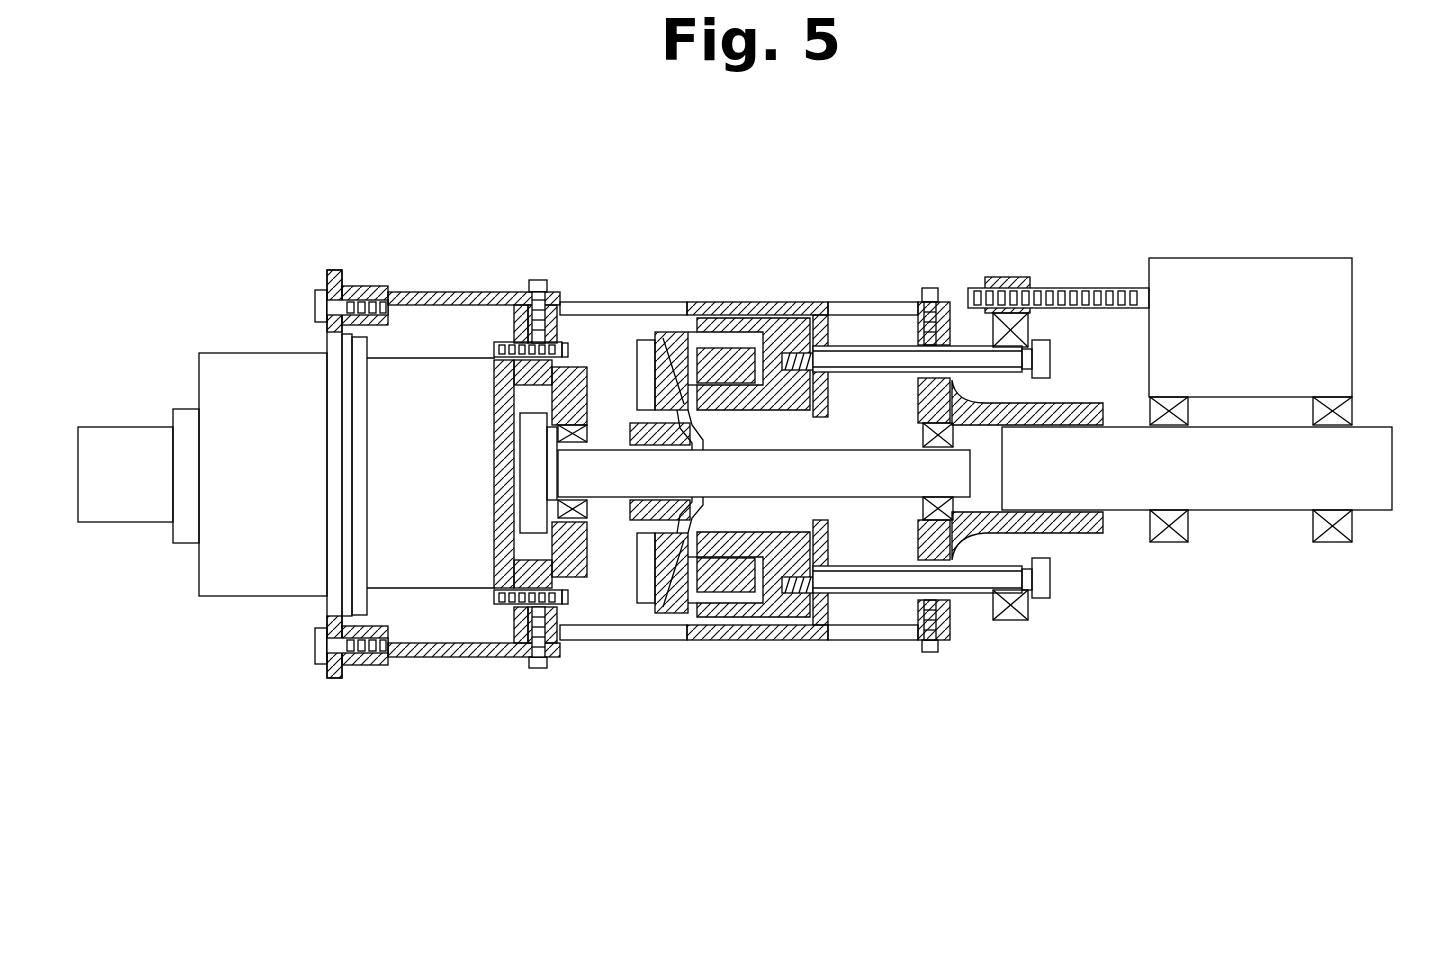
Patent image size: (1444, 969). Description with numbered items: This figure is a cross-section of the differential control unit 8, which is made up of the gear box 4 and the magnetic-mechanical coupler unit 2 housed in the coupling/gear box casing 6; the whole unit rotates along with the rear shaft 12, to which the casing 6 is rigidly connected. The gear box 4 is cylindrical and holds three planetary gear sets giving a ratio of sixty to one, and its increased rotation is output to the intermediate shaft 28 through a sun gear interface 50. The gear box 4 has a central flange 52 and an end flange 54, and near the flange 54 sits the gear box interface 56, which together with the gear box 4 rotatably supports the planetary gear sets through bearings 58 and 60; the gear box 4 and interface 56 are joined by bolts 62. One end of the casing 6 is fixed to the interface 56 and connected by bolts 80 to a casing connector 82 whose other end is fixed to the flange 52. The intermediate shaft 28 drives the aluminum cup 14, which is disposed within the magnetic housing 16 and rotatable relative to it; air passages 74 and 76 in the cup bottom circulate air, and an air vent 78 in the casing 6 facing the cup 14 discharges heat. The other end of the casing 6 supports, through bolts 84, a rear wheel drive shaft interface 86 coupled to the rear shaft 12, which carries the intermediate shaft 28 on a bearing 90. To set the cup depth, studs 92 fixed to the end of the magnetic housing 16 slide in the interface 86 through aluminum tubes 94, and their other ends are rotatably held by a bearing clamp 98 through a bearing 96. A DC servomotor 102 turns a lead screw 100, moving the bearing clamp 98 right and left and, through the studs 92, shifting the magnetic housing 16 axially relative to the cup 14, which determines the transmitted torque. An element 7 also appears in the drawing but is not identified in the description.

The magnetic-mechanical coupler unit 2 is at (735, 337).
The gear box 4 is at (258, 372).
The coupling/gear box casing 6 is at (576, 302).
The spacer ring 7 is at (636, 345).
The differential control unit 8 is at (733, 212).
The rear shaft 12 is at (1260, 490).
The aluminum cup 14 is at (680, 318).
The magnetic housing 16 is at (775, 625).
The intermediate shaft 28 is at (888, 460).
The sun gear interface 50 is at (530, 505).
The central flange 52 is at (333, 600).
The end flange 54 is at (500, 607).
The gear box interface 56 is at (578, 577).
The bearing 58 is at (185, 532).
The bearing 60 is at (592, 523).
The bolts 62 is at (565, 604).
The air passage 74 is at (650, 521).
The air passage 76 is at (667, 590).
The air vent 78 is at (660, 335).
The bolts 80 is at (536, 280).
The casing connector 82 is at (440, 292).
The bolts 84 is at (935, 302).
The rear wheel drive shaft interface 86 is at (1087, 537).
The bearing 90 is at (985, 622).
The studs 92 is at (893, 596).
The aluminum tubes 94 is at (880, 600).
The bearing 96 is at (1010, 622).
The bearing clamp 98 is at (1010, 277).
The lead screw 100 is at (1118, 288).
The DC servomotor 102 is at (1280, 333).